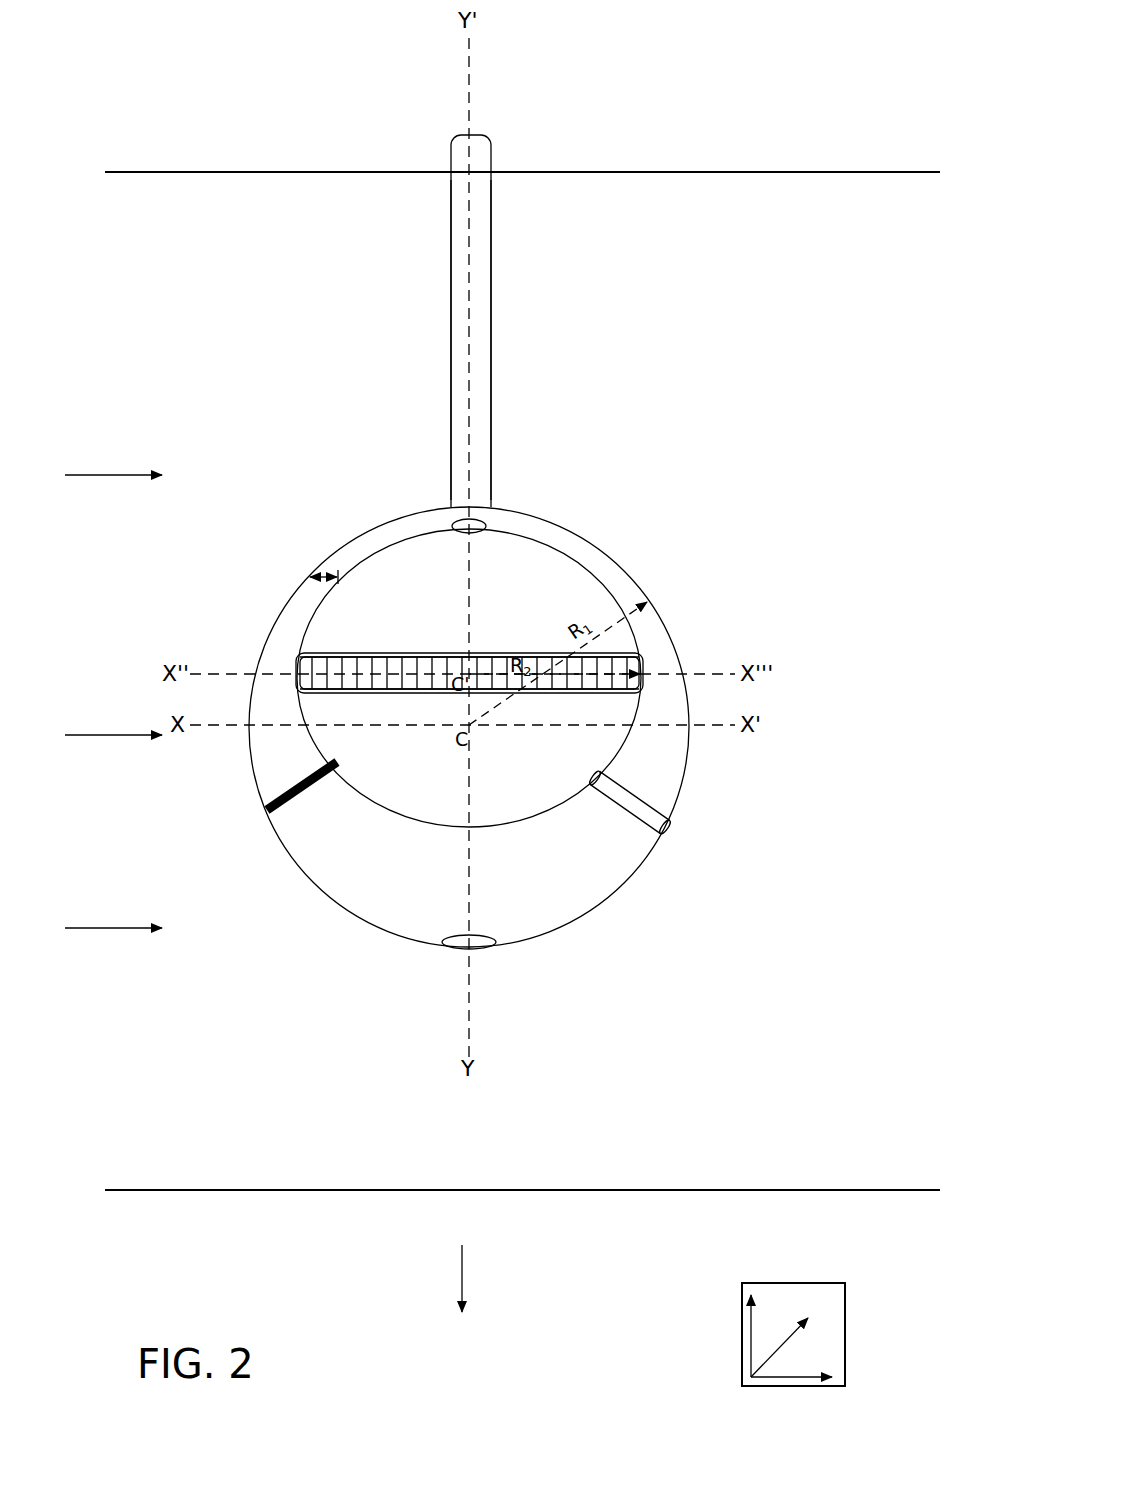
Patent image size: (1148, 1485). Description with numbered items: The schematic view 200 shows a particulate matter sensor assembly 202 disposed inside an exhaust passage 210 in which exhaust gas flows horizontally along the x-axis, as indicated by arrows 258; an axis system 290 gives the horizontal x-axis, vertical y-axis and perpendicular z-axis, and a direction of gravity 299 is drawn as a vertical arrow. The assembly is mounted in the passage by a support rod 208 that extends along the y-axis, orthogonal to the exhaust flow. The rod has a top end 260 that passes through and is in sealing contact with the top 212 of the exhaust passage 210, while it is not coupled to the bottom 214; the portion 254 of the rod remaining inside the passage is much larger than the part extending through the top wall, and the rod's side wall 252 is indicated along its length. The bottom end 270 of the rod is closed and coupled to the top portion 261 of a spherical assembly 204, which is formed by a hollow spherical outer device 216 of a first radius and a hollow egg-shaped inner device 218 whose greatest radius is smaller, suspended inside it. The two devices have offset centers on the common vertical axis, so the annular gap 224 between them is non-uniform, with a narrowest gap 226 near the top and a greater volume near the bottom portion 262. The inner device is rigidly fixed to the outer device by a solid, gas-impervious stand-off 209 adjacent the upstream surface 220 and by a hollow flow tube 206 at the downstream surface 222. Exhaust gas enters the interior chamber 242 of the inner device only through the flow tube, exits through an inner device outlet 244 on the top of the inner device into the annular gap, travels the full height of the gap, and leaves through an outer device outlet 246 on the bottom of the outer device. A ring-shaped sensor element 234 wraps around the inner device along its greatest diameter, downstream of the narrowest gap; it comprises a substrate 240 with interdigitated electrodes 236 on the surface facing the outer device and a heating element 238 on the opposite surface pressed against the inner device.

The schematic view 200 is at (827, 100).
The particulate matter sensor assembly 202 is at (704, 360).
The spherical assembly 204 is at (730, 548).
The flow tube 206 is at (613, 802).
The support rod 208 is at (418, 367).
The stand-off 209 is at (298, 786).
The exhaust passage 210 is at (240, 1170).
The top of the exhaust passage 212 is at (745, 173).
The bottom of the exhaust passage 214 is at (565, 1192).
The outer device 216 is at (620, 570).
The inner device 218 is at (570, 553).
The upstream surface 220 is at (186, 803).
The downstream surface 222 is at (697, 795).
The annular gap 224 is at (271, 789).
The narrowest gap 226 is at (330, 570).
The sensor element 234 is at (385, 630).
The interdigitated electrodes 236 is at (343, 694).
The heating element 238 is at (436, 638).
The substrate 240 is at (317, 658).
The interior chamber 242 is at (521, 618).
The inner device outlet 244 is at (455, 527).
The outer device outlet 246 is at (483, 937).
The mast outer surface 252 is at (499, 216).
The portion of the support rod 254 is at (491, 428).
The exhaust gas flow 258 is at (100, 473).
The top end of the support rod 260 is at (438, 130).
The top portion 261 is at (498, 497).
The bottom portion 262 is at (456, 965).
The bottom end of the support rod 270 is at (430, 492).
The axis system 290 is at (808, 1282).
The direction of gravity 299 is at (490, 1263).